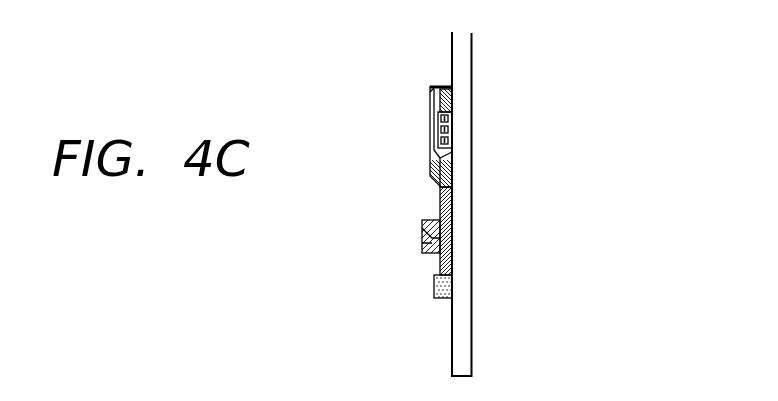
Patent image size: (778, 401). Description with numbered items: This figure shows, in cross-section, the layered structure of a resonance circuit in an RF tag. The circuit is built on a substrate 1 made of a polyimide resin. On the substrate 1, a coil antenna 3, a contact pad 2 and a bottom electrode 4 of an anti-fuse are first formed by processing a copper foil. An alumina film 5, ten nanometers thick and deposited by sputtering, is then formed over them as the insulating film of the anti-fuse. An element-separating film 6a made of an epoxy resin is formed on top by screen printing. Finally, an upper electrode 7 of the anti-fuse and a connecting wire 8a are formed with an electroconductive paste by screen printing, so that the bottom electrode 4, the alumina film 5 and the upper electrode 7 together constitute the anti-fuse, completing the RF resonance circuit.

The substrate 1 is at (463, 62).
The contact pad 2 is at (453, 99).
The coil antenna 3 is at (453, 122).
The bottom electrode 4 is at (453, 227).
The alumina film 5 is at (453, 190).
The element-separating film 6a is at (453, 147).
The upper electrode 7 is at (450, 246).
The connecting wire 8a is at (435, 86).